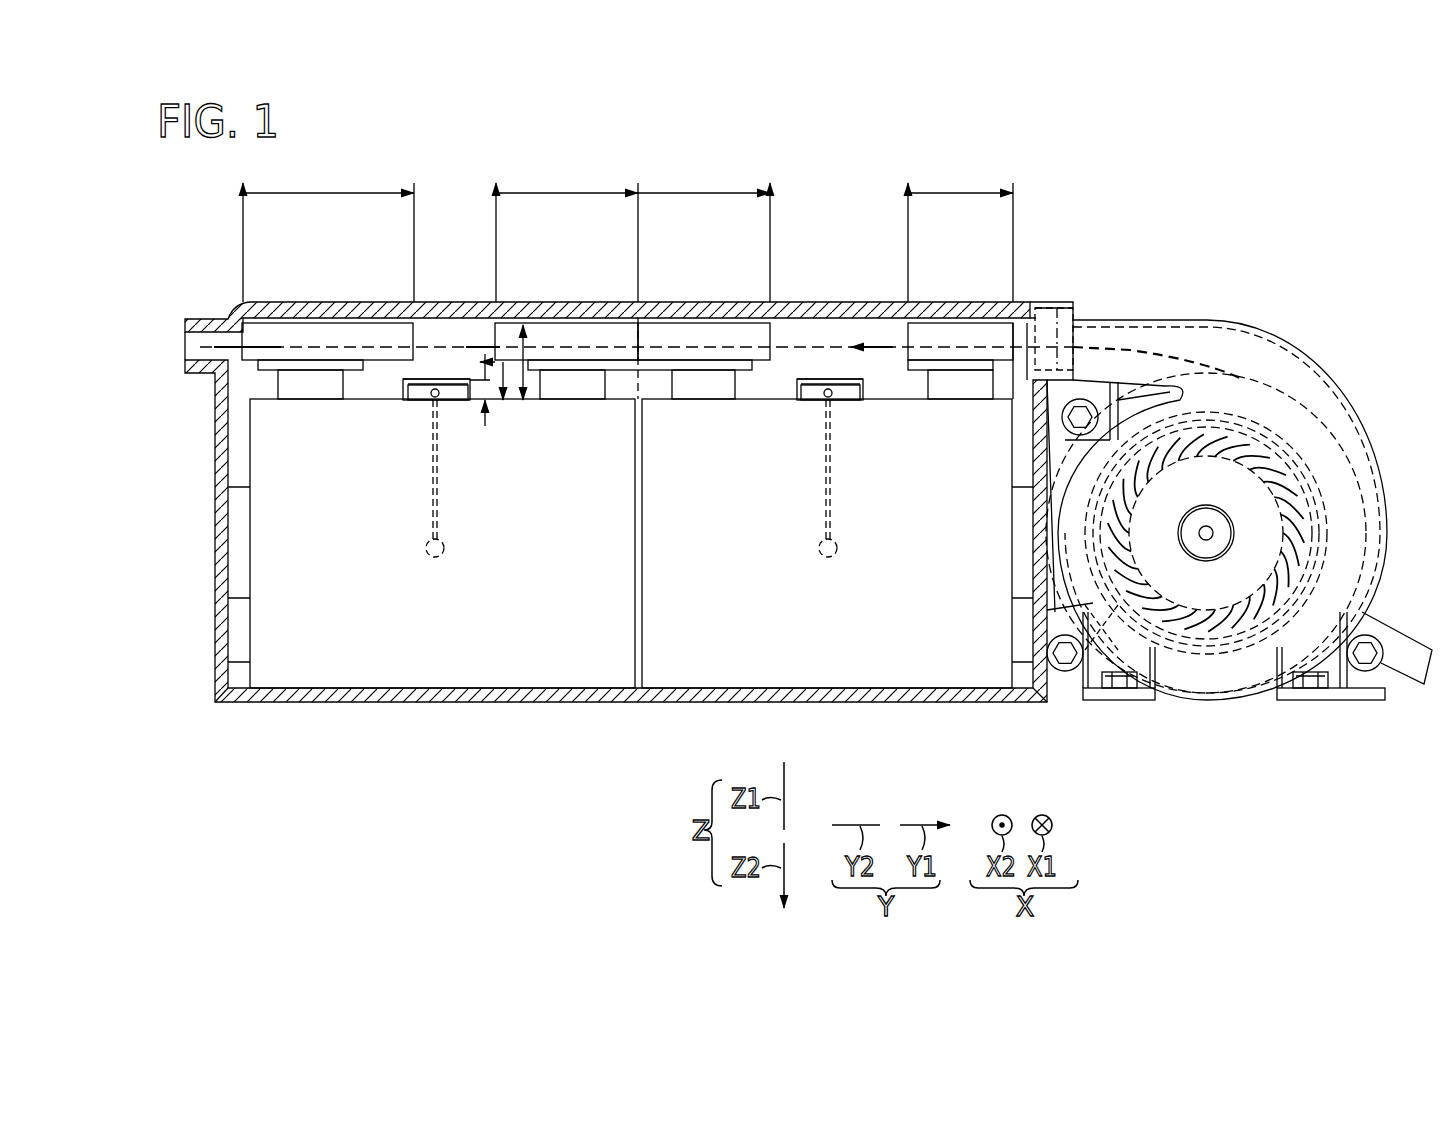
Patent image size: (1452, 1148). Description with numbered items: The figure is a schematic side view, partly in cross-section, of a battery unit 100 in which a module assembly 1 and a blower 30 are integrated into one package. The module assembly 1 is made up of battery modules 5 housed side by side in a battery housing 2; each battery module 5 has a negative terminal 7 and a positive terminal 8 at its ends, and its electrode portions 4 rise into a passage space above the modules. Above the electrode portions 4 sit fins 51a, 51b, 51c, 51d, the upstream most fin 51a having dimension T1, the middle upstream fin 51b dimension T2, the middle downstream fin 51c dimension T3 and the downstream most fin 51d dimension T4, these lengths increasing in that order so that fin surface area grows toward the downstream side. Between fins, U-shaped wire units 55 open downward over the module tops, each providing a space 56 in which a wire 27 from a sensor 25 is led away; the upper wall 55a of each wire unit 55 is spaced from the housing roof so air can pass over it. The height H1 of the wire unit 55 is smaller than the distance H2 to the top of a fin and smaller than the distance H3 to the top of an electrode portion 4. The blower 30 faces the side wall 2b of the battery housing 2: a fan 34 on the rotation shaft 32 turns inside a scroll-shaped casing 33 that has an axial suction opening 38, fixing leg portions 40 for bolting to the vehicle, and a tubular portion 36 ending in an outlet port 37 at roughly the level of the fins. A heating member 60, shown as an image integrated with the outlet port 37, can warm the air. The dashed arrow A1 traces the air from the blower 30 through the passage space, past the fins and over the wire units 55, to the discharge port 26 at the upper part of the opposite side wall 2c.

The battery unit 100 is at (1286, 236).
The module assembly 1 is at (588, 300).
The battery housing 2 is at (215, 520).
The side wall 2b is at (1047, 704).
The side wall 2c is at (222, 664).
The electrode portion 4 is at (913, 365).
The battery module 5 is at (455, 660).
The negative terminal 7 is at (347, 388).
The positive terminal 8 is at (583, 384).
The sensor 25 is at (839, 546).
The discharge port 26 is at (185, 320).
The wire 27 is at (833, 397).
The blower 30 is at (1358, 370).
The rotation shaft 32 is at (1210, 529).
The casing 33 is at (1386, 458).
The fan 34 is at (1195, 612).
The tubular portion 36 is at (1125, 320).
The outlet port 37 is at (1030, 323).
The suction opening 38 is at (1217, 603).
The fixing leg portion 40 is at (1092, 701).
The upstream most fin 51a is at (945, 334).
The middle upstream fin 51b is at (748, 337).
The middle downstream fin 51c is at (510, 335).
The downstream most fin 51d is at (355, 332).
The wire unit 55 is at (866, 393).
The upper wall 55a is at (822, 379).
The space 56 is at (808, 399).
The heating member 60 is at (1070, 318).
The dashed arrow A1 is at (1233, 375).
The dimension of the wire unit H1 is at (483, 414).
The distance H2 is at (528, 382).
The distance H3 is at (507, 382).
The dimension of the upstream most fin T1 is at (961, 192).
The dimension of the middle upstream fin T2 is at (701, 192).
The dimension of the middle downstream fin T3 is at (566, 192).
The dimension of the downstream most fin T4 is at (336, 192).